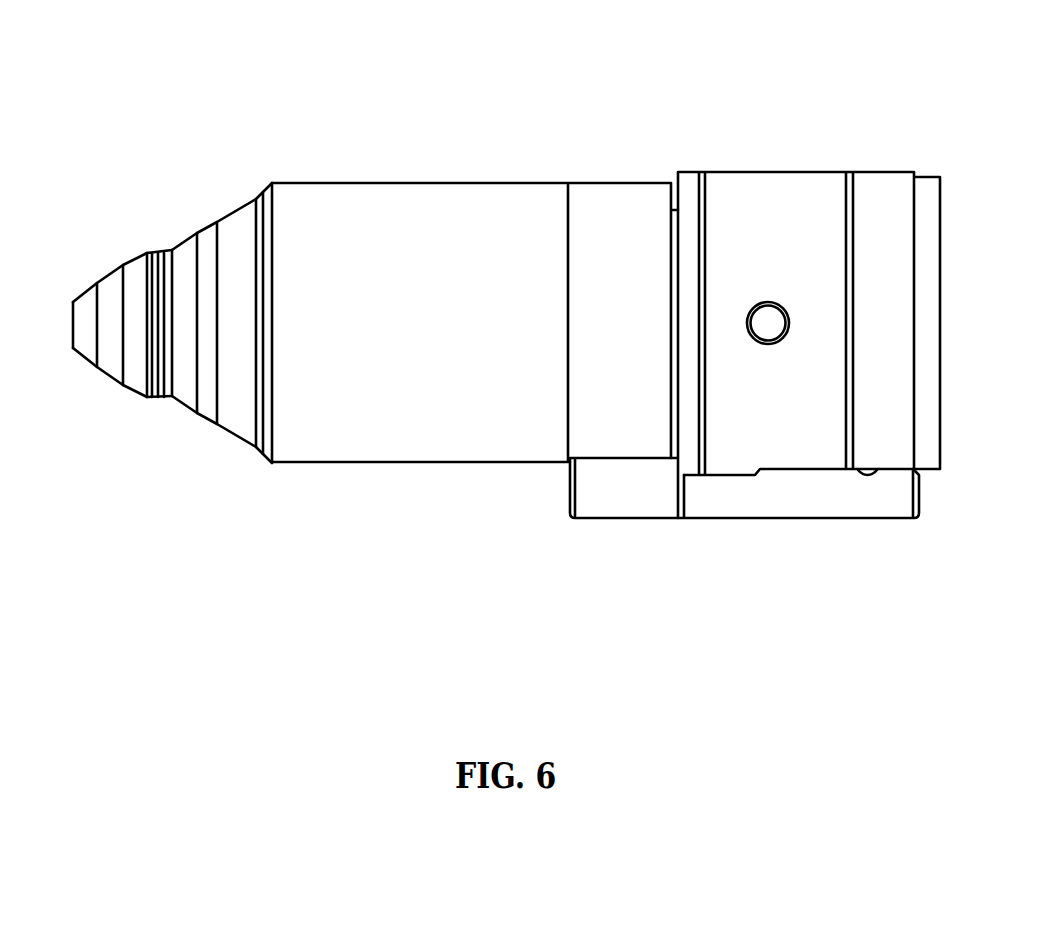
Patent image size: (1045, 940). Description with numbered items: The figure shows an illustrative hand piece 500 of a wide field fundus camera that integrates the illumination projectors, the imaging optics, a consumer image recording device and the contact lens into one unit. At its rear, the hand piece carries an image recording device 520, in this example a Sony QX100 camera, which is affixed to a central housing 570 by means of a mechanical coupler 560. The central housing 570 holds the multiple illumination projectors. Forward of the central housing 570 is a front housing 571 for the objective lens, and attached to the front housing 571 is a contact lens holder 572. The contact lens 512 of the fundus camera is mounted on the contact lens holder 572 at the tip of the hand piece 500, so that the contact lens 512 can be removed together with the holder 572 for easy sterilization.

The hand piece 500 is at (160, 99).
The contact lens 512 is at (73, 333).
The contact lens holder 572 is at (79, 302).
The front housing 571 is at (153, 255).
The central housing 570 is at (540, 183).
The image recording device 520 is at (800, 188).
The mechanical coupler 560 is at (797, 508).